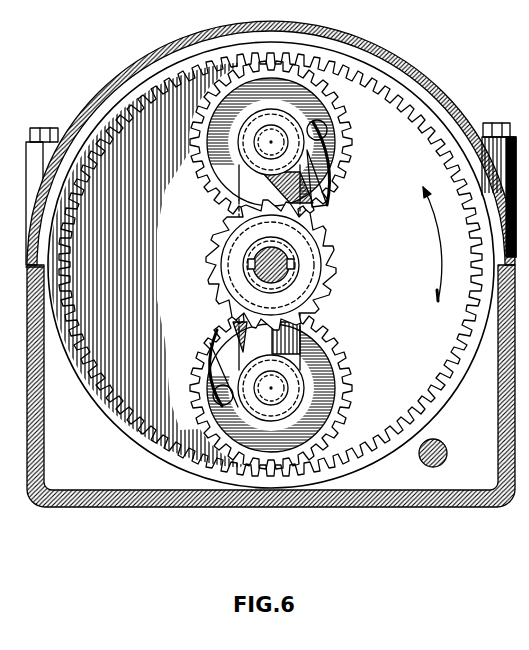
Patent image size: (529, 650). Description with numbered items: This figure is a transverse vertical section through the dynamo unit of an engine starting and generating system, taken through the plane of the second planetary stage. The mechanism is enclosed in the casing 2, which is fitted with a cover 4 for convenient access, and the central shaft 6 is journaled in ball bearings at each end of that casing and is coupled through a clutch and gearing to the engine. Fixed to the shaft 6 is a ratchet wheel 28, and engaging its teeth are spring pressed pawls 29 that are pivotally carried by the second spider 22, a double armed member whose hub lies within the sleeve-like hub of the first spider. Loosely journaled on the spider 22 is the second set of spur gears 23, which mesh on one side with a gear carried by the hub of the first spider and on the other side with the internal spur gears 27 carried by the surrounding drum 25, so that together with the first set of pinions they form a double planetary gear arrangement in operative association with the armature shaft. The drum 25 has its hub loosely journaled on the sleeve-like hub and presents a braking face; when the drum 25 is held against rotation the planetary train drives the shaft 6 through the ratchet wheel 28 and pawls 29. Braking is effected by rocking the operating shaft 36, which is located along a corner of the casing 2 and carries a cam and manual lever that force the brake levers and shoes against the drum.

The casing 2 is at (145, 507).
The cover 4 is at (148, 55).
The shaft 6 is at (280, 272).
The second spider 22 is at (255, 186).
The second set of spur gears 23 is at (348, 147).
The drum 25 is at (393, 88).
The internal spur gears 27 is at (465, 317).
The ratchet wheel 28 is at (210, 243).
The spring pressed pawls 29 is at (320, 211).
The operating shaft 36 is at (445, 460).